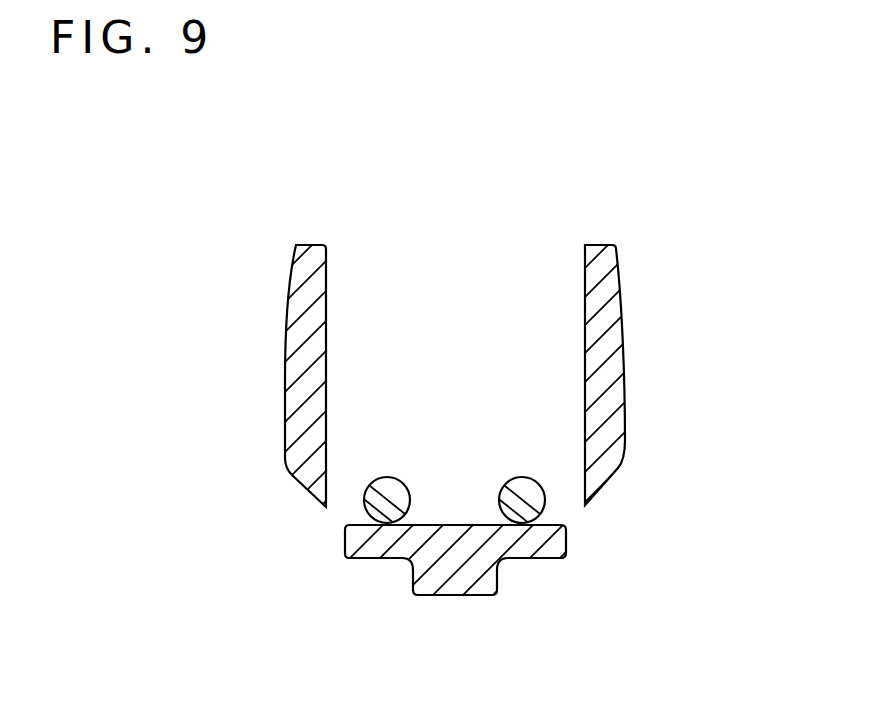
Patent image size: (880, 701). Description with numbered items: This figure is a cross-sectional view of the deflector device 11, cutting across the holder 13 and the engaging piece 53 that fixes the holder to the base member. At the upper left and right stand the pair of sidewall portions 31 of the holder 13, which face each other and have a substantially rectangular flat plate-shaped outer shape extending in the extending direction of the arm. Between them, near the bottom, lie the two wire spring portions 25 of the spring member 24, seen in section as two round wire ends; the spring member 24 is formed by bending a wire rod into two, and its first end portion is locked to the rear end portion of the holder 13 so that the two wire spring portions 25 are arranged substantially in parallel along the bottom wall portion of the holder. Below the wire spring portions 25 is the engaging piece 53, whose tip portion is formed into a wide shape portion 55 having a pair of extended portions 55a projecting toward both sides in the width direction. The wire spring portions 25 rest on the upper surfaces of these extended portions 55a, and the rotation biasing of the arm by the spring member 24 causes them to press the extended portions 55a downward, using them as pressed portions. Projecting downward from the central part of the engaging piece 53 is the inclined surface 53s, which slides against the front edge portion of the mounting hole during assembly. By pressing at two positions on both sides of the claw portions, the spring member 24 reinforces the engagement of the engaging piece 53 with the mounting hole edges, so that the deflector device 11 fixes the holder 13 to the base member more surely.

The deflector device 11 is at (172, 170).
The holder 13 is at (450, 390).
The sidewall portions 31 is at (286, 378).
The spring member 24 is at (452, 462).
The wire spring portions 25 is at (533, 429).
The wide shape portion 55 is at (440, 524).
The extended portions 55a is at (345, 551).
The engaging piece 53 is at (488, 535).
The inclined surface 53s is at (450, 597).